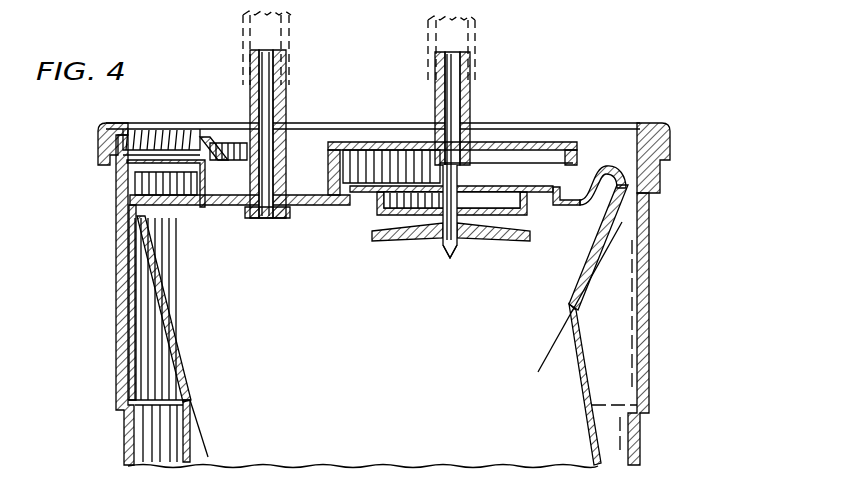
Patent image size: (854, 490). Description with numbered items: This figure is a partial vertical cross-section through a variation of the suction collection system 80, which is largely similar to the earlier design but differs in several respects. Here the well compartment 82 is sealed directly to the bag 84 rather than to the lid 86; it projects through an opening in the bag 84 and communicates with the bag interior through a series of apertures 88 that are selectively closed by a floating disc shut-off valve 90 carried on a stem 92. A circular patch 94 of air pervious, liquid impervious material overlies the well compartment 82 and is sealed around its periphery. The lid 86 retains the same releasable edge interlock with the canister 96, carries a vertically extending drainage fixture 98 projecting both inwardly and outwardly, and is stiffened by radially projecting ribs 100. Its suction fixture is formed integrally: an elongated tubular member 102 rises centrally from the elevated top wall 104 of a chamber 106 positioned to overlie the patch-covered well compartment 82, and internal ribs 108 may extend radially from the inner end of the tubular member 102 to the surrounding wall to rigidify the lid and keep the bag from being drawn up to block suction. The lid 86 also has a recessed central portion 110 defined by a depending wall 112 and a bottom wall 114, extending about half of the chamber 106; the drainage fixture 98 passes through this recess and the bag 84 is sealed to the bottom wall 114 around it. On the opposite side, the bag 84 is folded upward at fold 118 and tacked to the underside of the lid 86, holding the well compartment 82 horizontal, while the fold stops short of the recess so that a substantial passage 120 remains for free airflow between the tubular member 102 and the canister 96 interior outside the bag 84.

The suction collection system 80 is at (652, 226).
The well compartment 82 is at (554, 153).
The bag 84 is at (592, 354).
The lid 86 is at (649, 116).
The apertures 88 is at (408, 240).
The floating disc shut-off valve 90 is at (428, 242).
The stem 92 is at (448, 250).
The patch 94 is at (400, 162).
The canister 96 is at (651, 275).
The drainage fixture 98 is at (251, 100).
The ribs 100 is at (212, 160).
The tubular member 102 is at (467, 100).
The top wall 104 is at (417, 147).
The chamber 106 is at (493, 198).
The internal ribs 108 is at (578, 148).
The recessed central portion 110 is at (315, 182).
The depending wall 112 is at (213, 191).
The bottom wall 114 is at (308, 197).
The fold 118 is at (606, 190).
The passage 120 is at (510, 153).